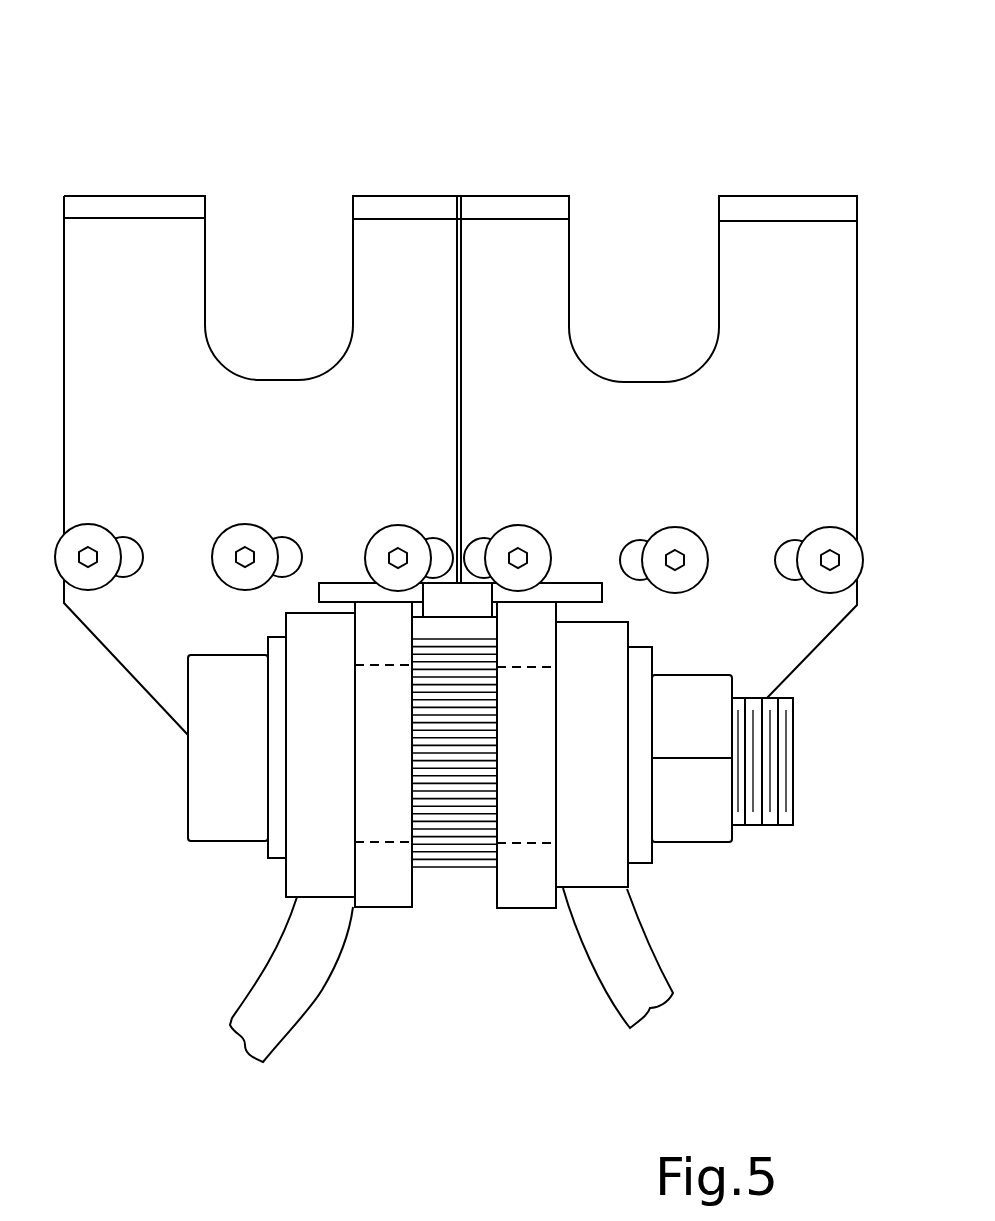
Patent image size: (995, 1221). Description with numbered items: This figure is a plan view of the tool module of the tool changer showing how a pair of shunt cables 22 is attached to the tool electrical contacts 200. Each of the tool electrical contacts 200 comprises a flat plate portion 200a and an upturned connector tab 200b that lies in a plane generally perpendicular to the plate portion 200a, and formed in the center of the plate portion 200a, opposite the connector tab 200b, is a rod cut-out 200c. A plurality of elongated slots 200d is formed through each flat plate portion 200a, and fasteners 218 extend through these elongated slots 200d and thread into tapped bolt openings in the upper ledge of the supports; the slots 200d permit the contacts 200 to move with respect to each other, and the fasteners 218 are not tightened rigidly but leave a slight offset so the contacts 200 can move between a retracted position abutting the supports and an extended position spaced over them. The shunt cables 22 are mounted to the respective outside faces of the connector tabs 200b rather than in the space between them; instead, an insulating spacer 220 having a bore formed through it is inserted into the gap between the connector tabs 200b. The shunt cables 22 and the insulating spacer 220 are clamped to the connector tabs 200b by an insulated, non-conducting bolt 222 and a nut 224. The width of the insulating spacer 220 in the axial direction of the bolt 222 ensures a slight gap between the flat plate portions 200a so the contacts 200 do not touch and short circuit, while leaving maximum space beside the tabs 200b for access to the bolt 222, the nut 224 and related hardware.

The tool electrical contacts 200 is at (498, 140).
The flat plate portion 200a is at (798, 280).
The connector tab 200b is at (382, 907).
The slots 200c is at (205, 302).
The elongated slots 200d is at (282, 540).
The fasteners 218 is at (242, 590).
The insulating spacer 220 is at (442, 870).
The insulated bolt 222 is at (225, 843).
The nut 224 is at (708, 842).
The shunt cables 22 is at (300, 1022).